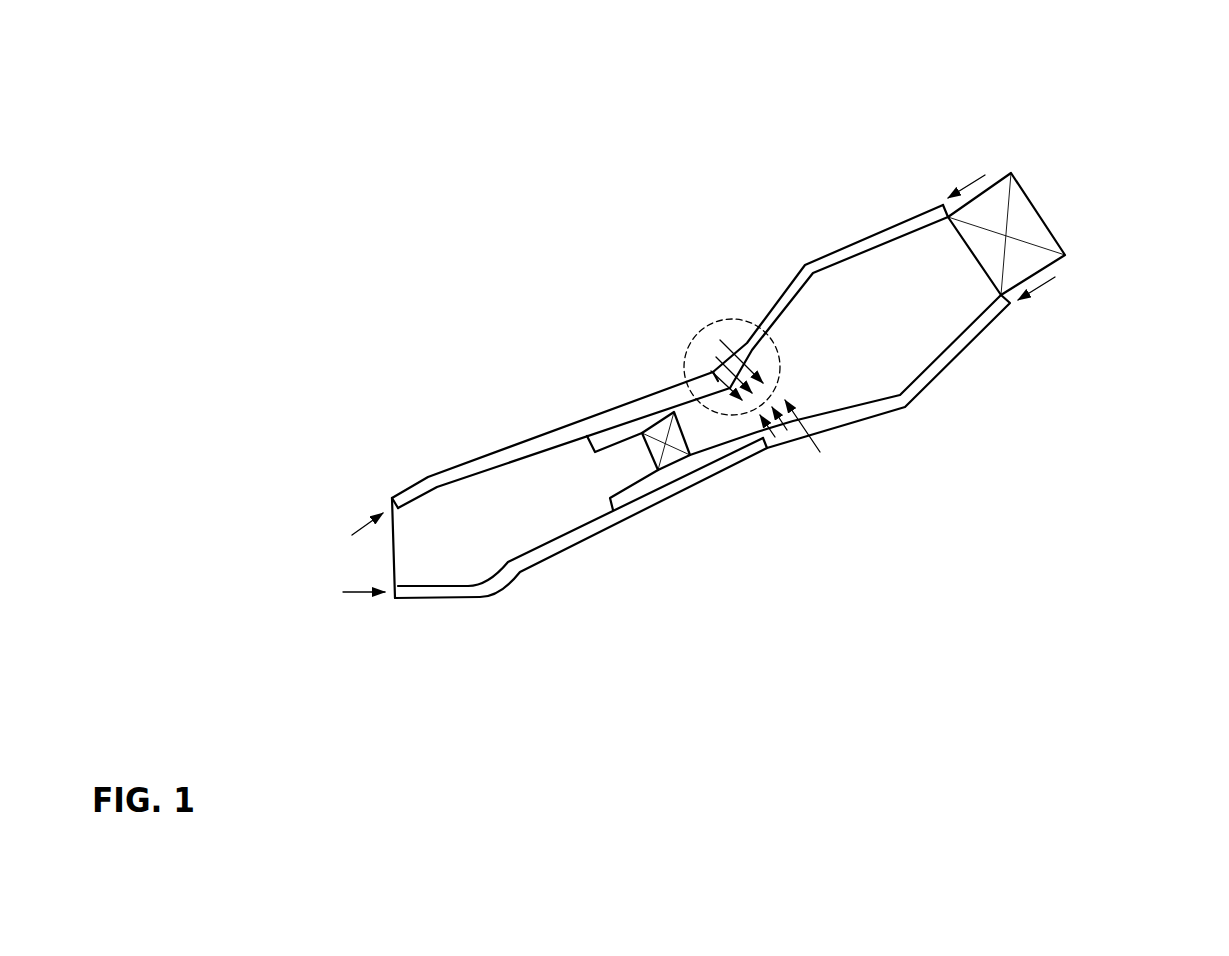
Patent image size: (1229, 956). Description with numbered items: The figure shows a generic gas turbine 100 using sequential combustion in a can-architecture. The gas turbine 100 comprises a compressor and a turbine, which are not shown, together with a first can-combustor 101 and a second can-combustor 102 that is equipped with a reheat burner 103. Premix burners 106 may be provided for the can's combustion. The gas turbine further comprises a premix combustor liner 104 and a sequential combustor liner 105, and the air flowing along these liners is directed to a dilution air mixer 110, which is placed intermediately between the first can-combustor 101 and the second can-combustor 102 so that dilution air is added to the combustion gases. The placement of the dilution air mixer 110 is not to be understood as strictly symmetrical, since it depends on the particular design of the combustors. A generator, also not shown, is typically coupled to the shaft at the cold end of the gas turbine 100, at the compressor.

The gas turbine 100 is at (677, 153).
The first can-combustor 101 is at (901, 332).
The second can-combustor 102 is at (510, 537).
The reheat burner 103 is at (672, 455).
The premix combustor liner 104 is at (860, 245).
The sequential combustor liner 105 is at (495, 460).
The premix burners 106 is at (1038, 256).
The dilution air mixer 110 is at (690, 343).